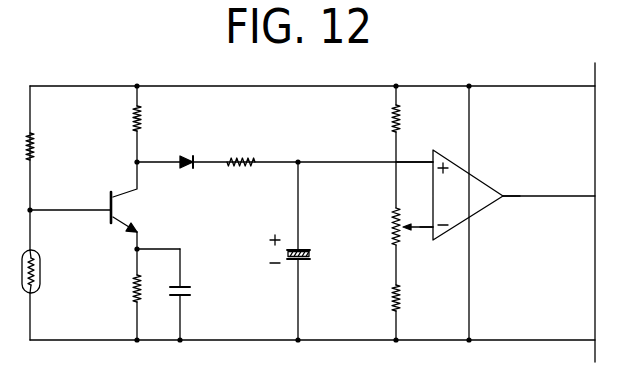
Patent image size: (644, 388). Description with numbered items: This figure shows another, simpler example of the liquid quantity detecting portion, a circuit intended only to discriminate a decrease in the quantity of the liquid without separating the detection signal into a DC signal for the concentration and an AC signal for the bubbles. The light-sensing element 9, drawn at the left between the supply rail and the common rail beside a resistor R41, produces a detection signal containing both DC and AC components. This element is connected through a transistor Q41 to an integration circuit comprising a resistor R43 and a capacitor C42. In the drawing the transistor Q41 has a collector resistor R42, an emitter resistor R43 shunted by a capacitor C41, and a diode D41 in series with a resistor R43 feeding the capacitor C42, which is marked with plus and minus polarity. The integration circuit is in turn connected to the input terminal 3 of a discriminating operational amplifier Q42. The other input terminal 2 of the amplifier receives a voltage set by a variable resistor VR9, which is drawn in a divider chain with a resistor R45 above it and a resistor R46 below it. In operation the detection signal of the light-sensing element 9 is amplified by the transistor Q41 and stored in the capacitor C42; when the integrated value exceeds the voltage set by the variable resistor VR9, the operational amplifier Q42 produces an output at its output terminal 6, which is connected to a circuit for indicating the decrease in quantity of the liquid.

The resistor R41 is at (50, 147).
The resistor R42 is at (161, 124).
The resistor R43 is at (176, 249).
The diode D41 is at (192, 179).
The transistor Q41 is at (115, 204).
The light-sensing element 9 is at (40, 273).
The capacitor C41 is at (202, 294).
The capacitor C42 is at (312, 254).
The resistor R45 is at (422, 147).
The variable resistor VR9 is at (387, 226).
The resistor R46 is at (422, 292).
The discriminating operational amplifier Q42 is at (468, 198).
The input terminal 3 is at (414, 152).
The inverting input pin 2 is at (425, 217).
The output terminal 6 is at (509, 183).